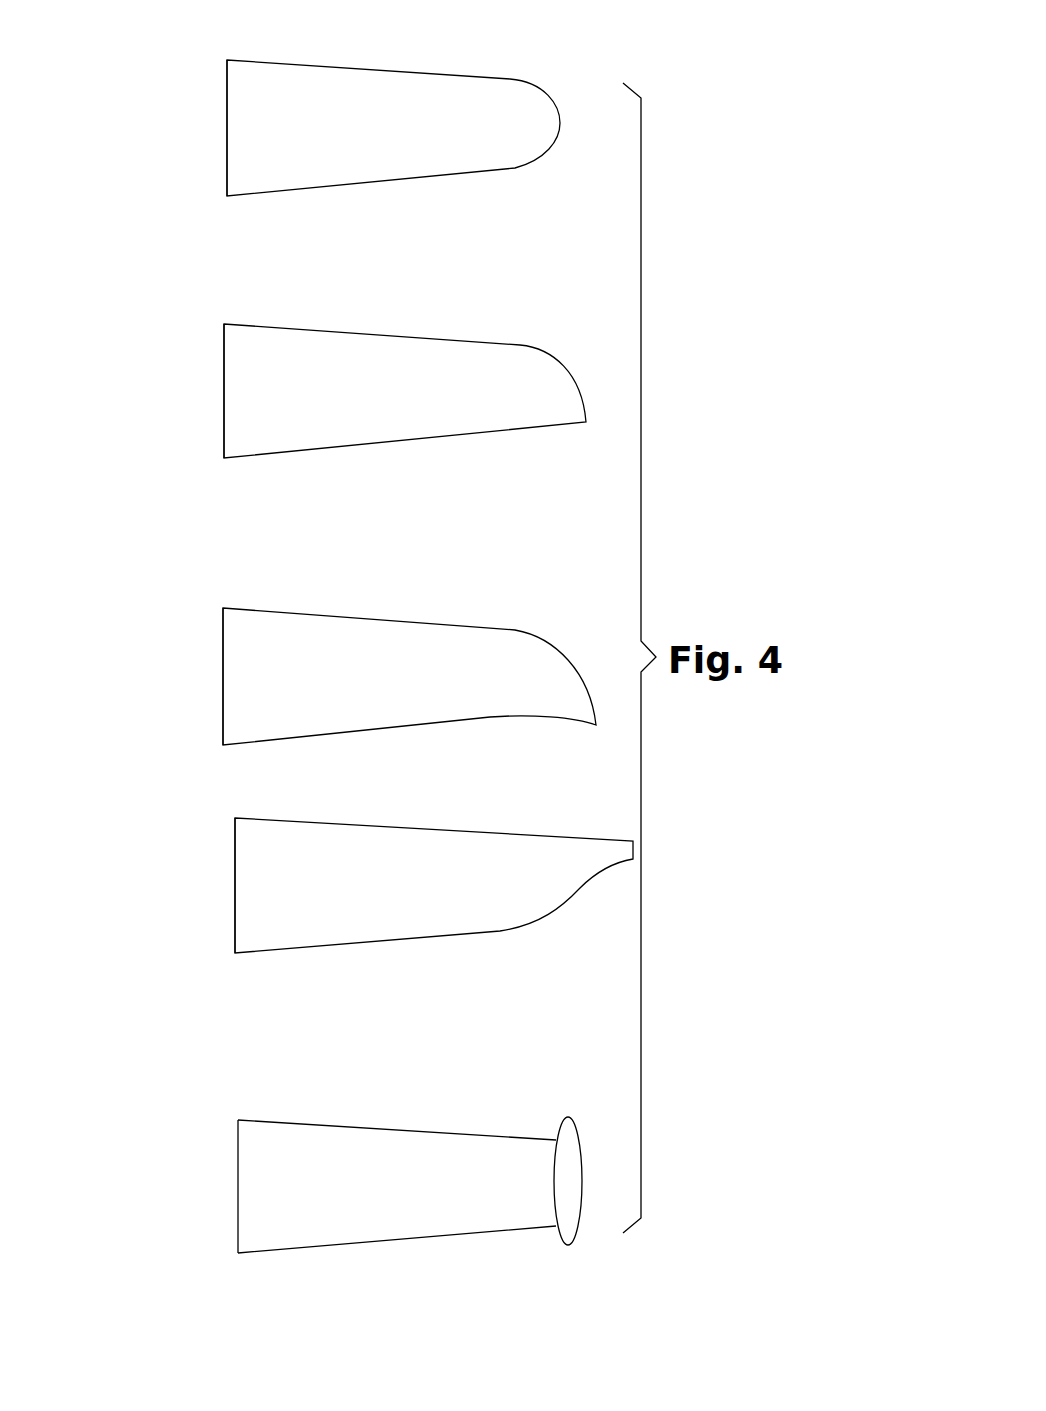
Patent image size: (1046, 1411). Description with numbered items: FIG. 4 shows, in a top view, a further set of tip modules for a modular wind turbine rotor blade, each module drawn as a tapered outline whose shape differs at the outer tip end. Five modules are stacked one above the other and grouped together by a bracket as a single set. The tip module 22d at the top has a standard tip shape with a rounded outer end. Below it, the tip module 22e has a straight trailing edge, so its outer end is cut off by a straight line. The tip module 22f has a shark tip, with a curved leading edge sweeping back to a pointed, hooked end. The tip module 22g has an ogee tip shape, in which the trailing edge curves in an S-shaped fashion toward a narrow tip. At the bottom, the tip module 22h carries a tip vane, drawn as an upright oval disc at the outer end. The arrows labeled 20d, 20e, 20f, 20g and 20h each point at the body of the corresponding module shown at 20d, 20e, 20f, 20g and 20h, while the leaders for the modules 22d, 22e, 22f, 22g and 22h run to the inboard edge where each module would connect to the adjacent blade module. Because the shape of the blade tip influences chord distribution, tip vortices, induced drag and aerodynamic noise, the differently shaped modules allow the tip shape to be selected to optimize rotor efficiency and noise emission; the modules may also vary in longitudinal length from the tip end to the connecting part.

The tool blade (rounded tip) 20d is at (178, 62).
The tip module 22d is at (227, 145).
The tool blade (curved corner tip) 20e is at (177, 358).
The tip module 22e is at (223, 437).
The tool blade (hooked tip) 20f is at (183, 617).
The tip module 22f is at (222, 695).
The tool blade (tapered tip) 20g is at (190, 823).
The tip module 22g is at (233, 903).
The tool blade (disc tip) 20h is at (197, 1127).
The tip module 22h is at (237, 1205).